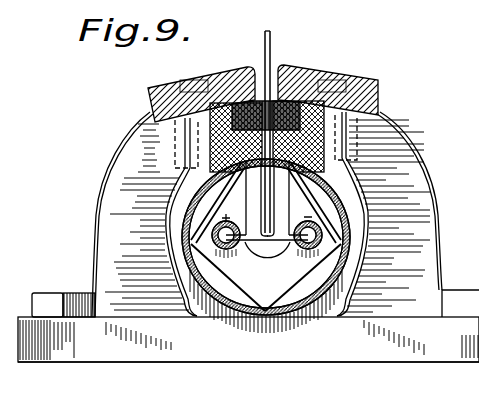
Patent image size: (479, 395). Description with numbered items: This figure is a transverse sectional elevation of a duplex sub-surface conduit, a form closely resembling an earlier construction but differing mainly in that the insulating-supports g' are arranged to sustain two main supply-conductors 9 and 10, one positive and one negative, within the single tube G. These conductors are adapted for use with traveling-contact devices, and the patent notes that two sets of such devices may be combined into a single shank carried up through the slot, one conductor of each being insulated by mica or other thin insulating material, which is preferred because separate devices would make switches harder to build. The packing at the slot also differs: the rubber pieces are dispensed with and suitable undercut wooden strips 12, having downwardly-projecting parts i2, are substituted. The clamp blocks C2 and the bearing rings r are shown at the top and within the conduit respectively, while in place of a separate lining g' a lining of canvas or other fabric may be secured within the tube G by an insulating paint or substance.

The clamp blocks C2 is at (305, 68).
The tube G is at (248, 237).
The undercut wooden strips 12 is at (247, 198).
The downwardly-projecting parts i2 is at (285, 198).
The roller bearings r is at (265, 236).
The main supply-conductor 9 is at (228, 277).
The main supply-conductor 10 is at (303, 277).
The insulating-supports g' is at (267, 267).